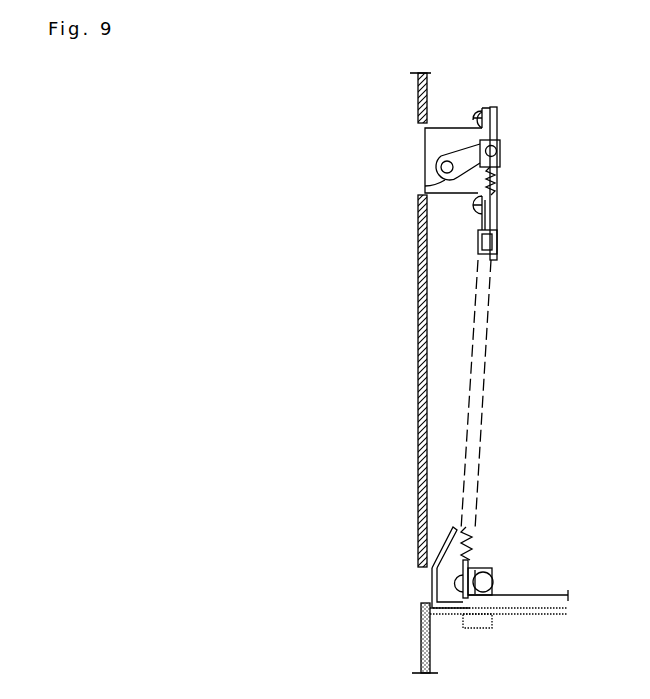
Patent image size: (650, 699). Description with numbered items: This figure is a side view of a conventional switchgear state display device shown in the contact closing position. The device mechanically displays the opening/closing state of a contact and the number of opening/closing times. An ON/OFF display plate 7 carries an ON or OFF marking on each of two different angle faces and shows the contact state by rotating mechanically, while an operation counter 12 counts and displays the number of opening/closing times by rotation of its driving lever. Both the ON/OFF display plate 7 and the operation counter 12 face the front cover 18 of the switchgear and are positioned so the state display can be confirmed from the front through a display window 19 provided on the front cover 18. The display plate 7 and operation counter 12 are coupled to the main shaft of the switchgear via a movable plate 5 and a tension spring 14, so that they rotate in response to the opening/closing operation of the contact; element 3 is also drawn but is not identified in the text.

The pressing member 3 is at (425, 186).
The movable plate 5 is at (541, 608).
The ON/OFF display plate 7 is at (430, 568).
The operation counter 12 is at (437, 166).
The tension spring 14 is at (465, 452).
The front cover 18 is at (420, 334).
The display window 19 is at (423, 148).